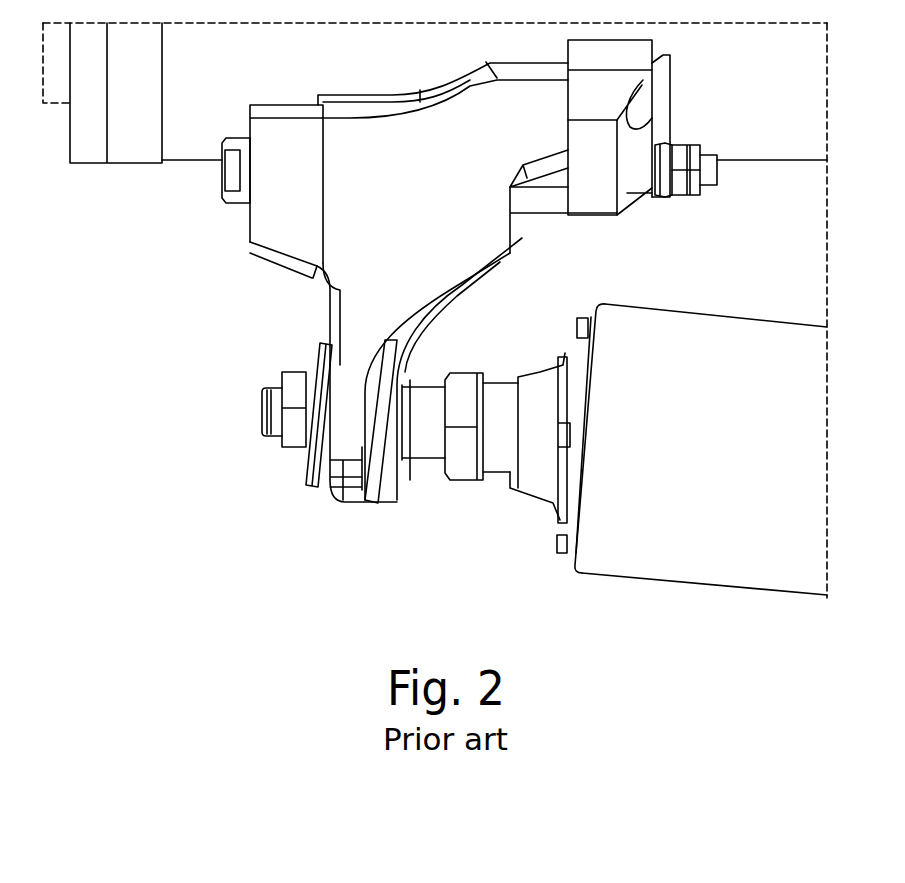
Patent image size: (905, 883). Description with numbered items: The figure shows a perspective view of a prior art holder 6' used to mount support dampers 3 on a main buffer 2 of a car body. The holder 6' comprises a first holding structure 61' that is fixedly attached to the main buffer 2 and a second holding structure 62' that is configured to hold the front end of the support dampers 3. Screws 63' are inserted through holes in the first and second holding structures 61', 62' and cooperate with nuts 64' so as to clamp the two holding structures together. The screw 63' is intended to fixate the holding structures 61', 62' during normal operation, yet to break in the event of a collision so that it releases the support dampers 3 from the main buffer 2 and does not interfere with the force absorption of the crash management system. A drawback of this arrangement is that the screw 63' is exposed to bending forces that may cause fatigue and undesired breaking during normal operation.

The main buffer 2 is at (768, 168).
The support dampers 3 is at (534, 545).
The holder 6' is at (422, 271).
The first holding structure 61' is at (610, 174).
The second holding structure 62' is at (452, 369).
The screw 63' is at (186, 186).
The nut 64' is at (688, 222).